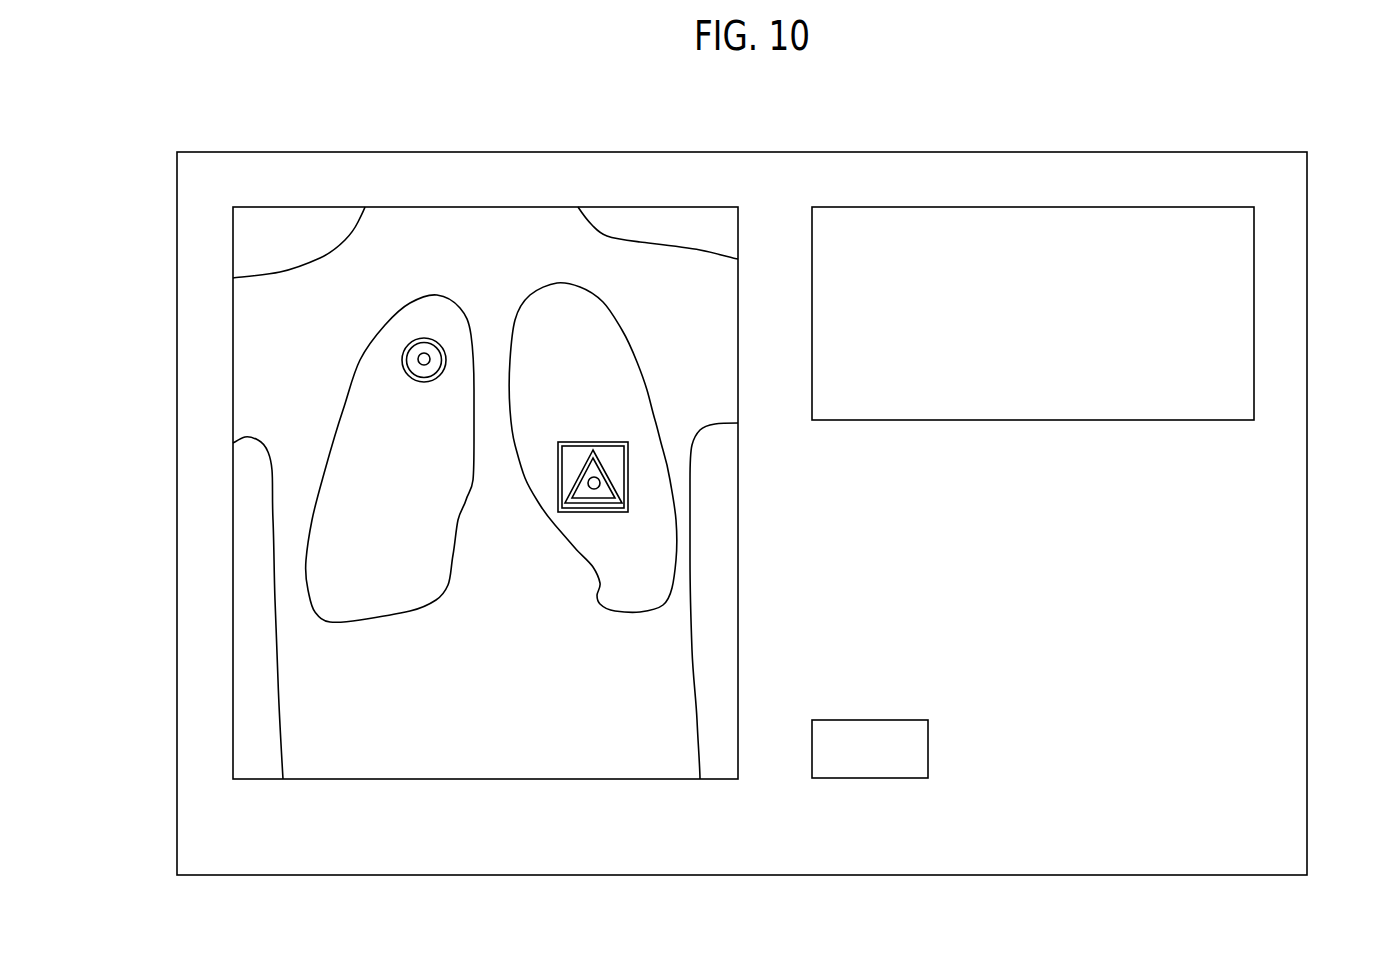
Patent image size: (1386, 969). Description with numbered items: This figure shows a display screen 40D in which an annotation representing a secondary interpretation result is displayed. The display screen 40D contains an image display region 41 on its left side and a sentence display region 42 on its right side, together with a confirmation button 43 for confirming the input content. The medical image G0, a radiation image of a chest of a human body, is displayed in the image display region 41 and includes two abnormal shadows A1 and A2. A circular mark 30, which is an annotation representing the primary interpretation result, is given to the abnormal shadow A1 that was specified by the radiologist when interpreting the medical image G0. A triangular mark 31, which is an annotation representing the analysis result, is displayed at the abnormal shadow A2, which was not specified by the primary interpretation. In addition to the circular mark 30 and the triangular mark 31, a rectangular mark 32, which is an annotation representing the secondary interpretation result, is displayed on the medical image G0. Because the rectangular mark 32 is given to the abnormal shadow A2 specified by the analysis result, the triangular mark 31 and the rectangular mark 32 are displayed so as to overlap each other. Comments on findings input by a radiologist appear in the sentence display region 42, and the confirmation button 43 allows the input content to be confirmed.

The display screen 40D is at (1210, 152).
The image display region 41 is at (665, 207).
The medical image G0 is at (713, 220).
The circular mark 30 is at (425, 338).
The abnormal shadow A1 is at (424, 359).
The triangular mark 31 is at (595, 490).
The rectangular mark 32 is at (628, 482).
The abnormal shadow A2 is at (578, 498).
The sentence display region 42 is at (1254, 312).
The confirmation button 43 is at (863, 779).